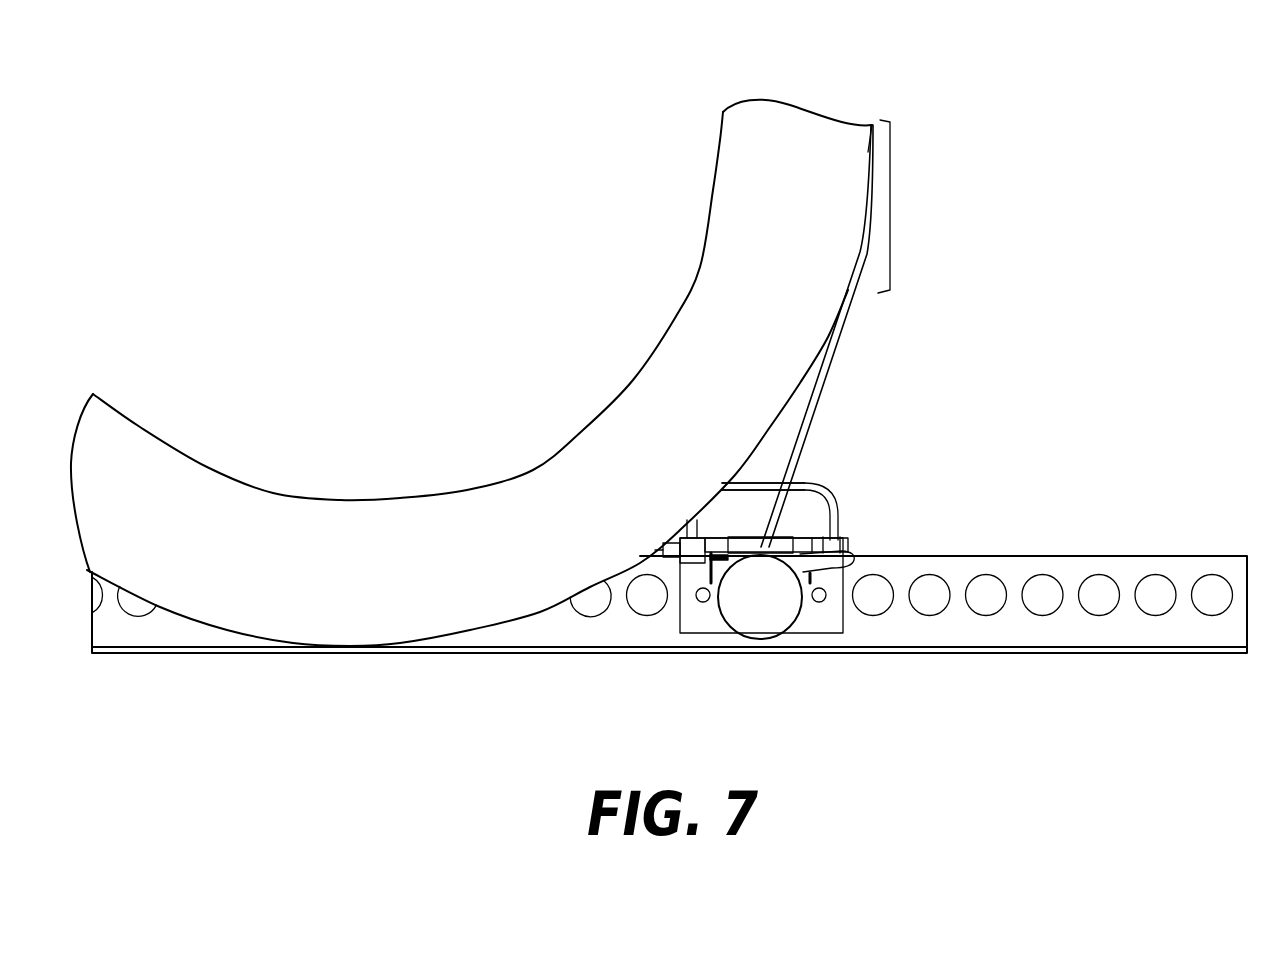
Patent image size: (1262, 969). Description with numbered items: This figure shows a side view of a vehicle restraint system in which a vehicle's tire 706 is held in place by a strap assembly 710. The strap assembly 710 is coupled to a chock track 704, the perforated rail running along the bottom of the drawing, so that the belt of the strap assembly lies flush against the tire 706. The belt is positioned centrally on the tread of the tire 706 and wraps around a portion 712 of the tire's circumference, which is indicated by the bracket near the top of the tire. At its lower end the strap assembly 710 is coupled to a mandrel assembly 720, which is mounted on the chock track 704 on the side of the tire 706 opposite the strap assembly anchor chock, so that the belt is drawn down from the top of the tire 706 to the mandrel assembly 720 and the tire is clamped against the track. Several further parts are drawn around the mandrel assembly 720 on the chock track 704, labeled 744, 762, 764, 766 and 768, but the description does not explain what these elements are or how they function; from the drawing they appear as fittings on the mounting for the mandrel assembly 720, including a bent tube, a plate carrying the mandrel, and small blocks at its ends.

The chock track 704 is at (1097, 630).
The tire 706 is at (870, 128).
The strap assembly 710 is at (824, 362).
The portion of the circumference of tire 712 is at (890, 207).
The mandrel assembly 720 is at (766, 612).
The cam lobe 744 is at (840, 548).
The mounting block 762 is at (687, 560).
The bent tube 764 is at (802, 538).
The mounting plate 766 is at (828, 613).
The tube top portion 768 is at (798, 487).